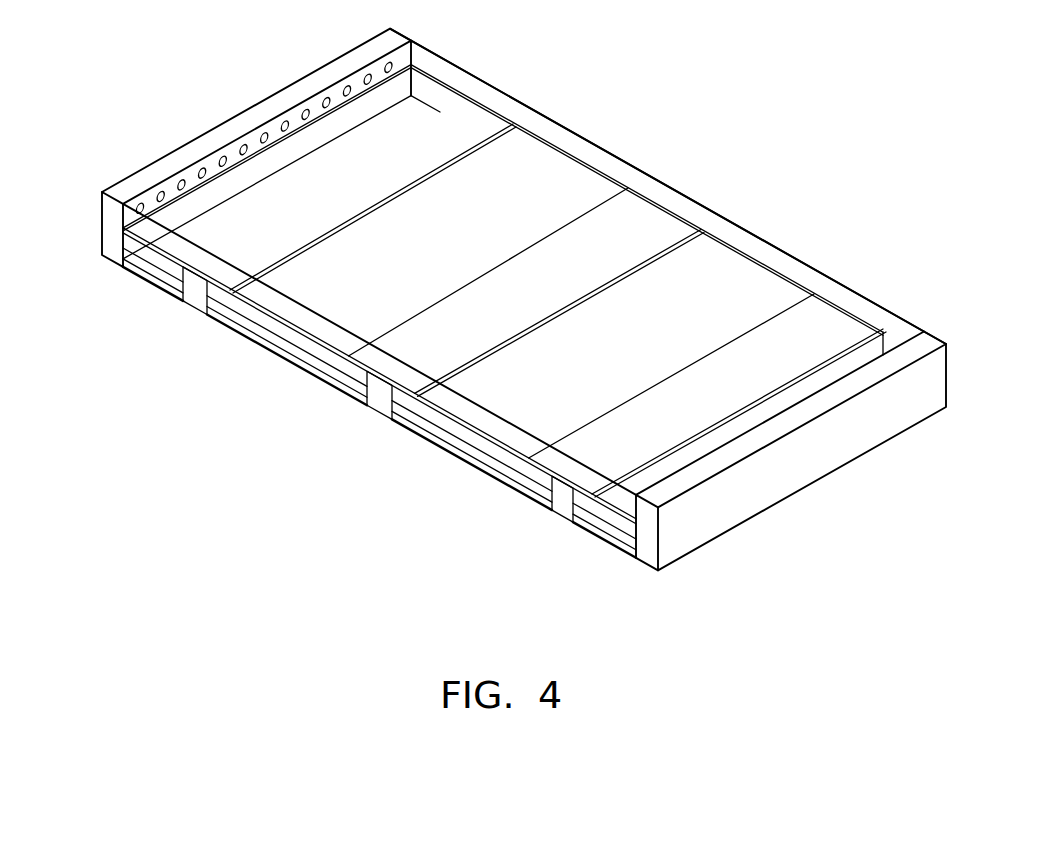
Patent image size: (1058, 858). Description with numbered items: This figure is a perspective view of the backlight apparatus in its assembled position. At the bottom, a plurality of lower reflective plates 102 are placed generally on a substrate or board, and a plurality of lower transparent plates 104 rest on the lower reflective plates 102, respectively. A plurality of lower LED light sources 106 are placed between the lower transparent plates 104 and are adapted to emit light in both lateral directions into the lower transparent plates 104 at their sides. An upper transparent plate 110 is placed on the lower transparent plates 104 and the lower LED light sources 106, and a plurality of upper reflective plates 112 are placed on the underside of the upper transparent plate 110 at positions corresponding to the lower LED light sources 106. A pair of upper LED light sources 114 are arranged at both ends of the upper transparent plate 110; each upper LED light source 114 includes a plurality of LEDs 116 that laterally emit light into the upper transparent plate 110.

The lower reflective plate 102 is at (437, 437).
The lower transparent plate 104 is at (247, 318).
The lower LED light source 106 is at (553, 490).
The upper transparent plate 110 is at (440, 62).
The upper reflective plate 112 is at (650, 228).
The upper LED light source 114 is at (108, 217).
The LED 116 is at (243, 147).